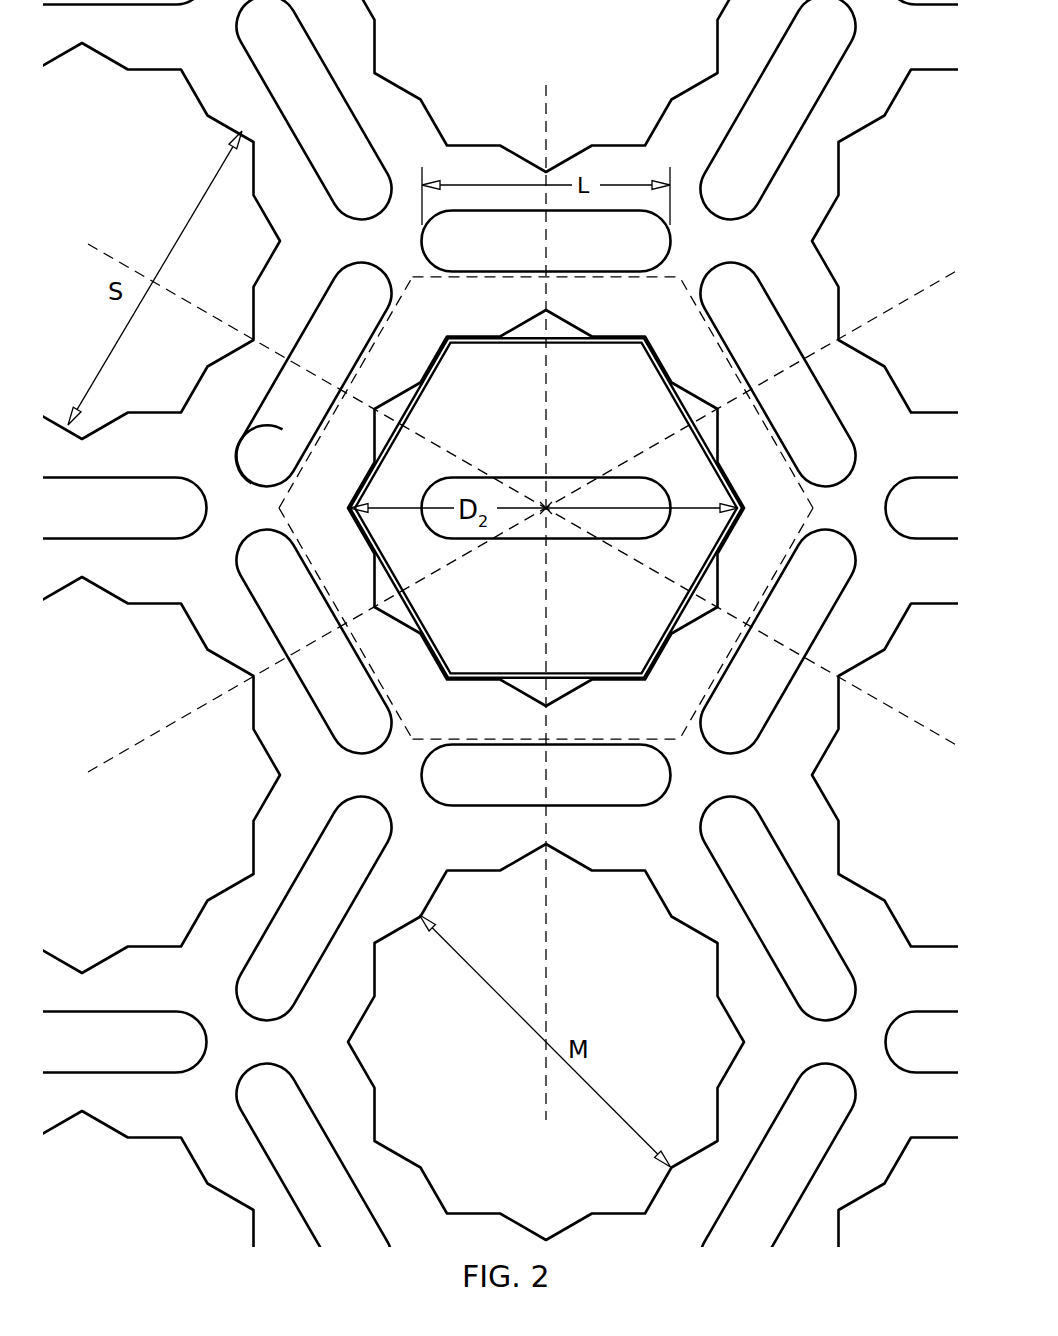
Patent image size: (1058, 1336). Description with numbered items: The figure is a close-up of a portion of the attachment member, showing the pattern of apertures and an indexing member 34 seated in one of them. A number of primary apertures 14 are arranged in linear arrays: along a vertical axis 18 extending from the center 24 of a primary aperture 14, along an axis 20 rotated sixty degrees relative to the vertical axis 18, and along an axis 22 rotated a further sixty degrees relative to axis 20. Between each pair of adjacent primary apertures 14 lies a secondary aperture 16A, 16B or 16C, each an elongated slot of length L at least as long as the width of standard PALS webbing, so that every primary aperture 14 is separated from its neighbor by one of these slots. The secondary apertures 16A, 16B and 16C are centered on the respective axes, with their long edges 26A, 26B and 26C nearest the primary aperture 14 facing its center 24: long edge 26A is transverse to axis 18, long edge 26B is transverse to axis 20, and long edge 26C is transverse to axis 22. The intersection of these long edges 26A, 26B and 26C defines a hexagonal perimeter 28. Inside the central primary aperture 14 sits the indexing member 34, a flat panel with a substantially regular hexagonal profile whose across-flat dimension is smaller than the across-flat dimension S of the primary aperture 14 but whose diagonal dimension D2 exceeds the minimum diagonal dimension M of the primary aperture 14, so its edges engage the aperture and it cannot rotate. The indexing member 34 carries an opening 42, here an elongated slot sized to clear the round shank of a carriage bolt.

The primary aperture 14 is at (393, 408).
The secondary aperture 16A is at (608, 790).
The secondary aperture 16B is at (364, 693).
The secondary aperture 16C is at (765, 723).
The vertical axis 18 is at (544, 117).
The axis 20 is at (908, 300).
The axis 22 is at (873, 698).
The center 24 is at (546, 507).
The long edge 26A is at (582, 277).
The long edge 26B is at (787, 454).
The long edge 26C is at (717, 672).
The hexagonal perimeter 28 is at (243, 486).
The indexing member 34 is at (470, 648).
The opening 42 is at (636, 514).